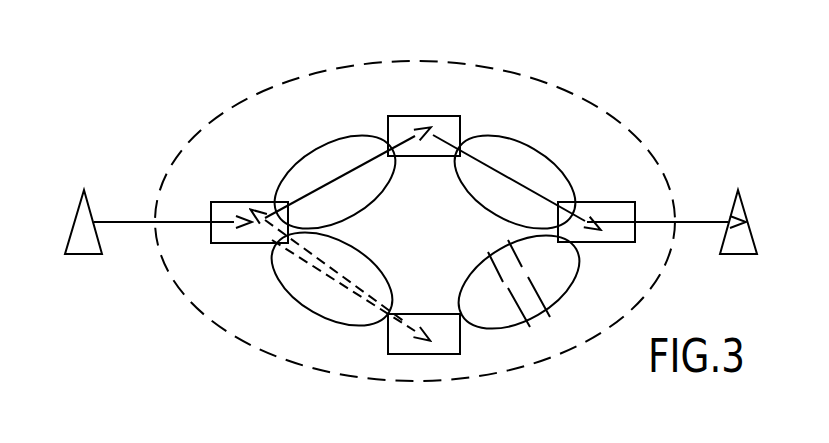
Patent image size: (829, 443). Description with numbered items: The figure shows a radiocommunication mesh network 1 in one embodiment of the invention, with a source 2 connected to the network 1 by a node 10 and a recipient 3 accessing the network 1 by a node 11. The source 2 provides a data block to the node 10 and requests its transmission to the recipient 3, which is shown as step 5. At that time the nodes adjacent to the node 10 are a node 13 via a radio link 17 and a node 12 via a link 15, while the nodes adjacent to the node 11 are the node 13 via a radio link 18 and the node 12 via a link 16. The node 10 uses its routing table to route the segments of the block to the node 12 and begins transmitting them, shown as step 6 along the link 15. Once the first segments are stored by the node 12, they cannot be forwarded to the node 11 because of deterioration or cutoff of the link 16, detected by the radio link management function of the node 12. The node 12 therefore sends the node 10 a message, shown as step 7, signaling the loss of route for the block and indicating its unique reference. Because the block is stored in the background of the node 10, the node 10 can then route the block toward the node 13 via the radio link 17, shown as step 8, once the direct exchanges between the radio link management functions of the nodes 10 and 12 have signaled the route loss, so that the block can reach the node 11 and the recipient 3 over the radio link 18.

The mesh network 1 is at (197, 132).
The source 2 is at (79, 212).
The recipient 3 is at (745, 226).
The step of providing a data block 5 is at (130, 220).
The step of transmitting segments 6 is at (327, 280).
The step of signaling route loss 7 is at (357, 287).
The step of routing the block 8 is at (362, 172).
The node 10 is at (240, 202).
The node 11 is at (610, 207).
The node 12 is at (428, 347).
The node 13 is at (427, 160).
The link 15 is at (333, 322).
The link 16 is at (518, 327).
The radio link 17 is at (315, 150).
The radio link 18 is at (537, 140).